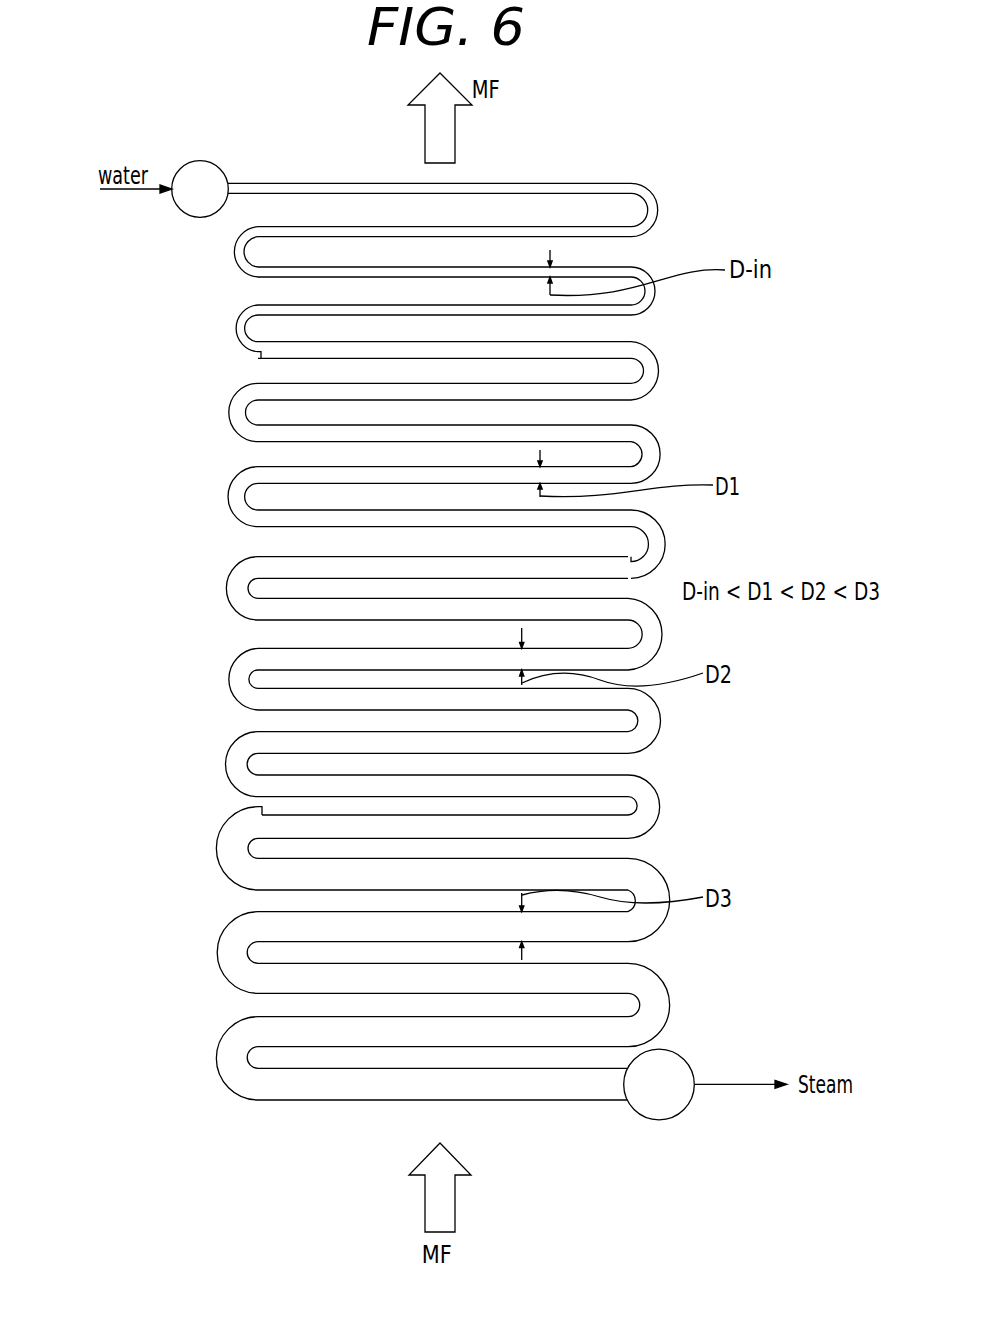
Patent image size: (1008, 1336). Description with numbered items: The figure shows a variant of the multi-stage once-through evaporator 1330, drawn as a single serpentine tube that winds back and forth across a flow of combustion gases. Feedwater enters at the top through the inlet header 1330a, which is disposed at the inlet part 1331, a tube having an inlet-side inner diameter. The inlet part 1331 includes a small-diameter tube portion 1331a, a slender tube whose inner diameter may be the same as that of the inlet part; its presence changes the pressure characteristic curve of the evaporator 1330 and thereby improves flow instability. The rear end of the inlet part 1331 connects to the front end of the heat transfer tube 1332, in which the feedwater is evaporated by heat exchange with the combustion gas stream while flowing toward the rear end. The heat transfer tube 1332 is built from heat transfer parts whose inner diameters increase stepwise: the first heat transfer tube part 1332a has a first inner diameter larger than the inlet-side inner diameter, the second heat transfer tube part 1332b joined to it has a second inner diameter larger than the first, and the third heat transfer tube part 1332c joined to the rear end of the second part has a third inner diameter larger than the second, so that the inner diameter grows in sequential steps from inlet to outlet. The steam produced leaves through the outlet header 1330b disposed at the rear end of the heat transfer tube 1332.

The multi-stage once-through evaporator 1330 is at (160, 92).
The inlet header 1330a is at (193, 178).
The outlet header 1330b is at (661, 1112).
The inlet part 1331 is at (387, 224).
The small-diameter tube portion 1331a is at (587, 186).
The heat transfer tube 1332 is at (117, 462).
The first heat transfer tube part 1332a is at (214, 435).
The second heat transfer tube part 1332b is at (214, 672).
The third heat transfer tube part 1332c is at (214, 927).